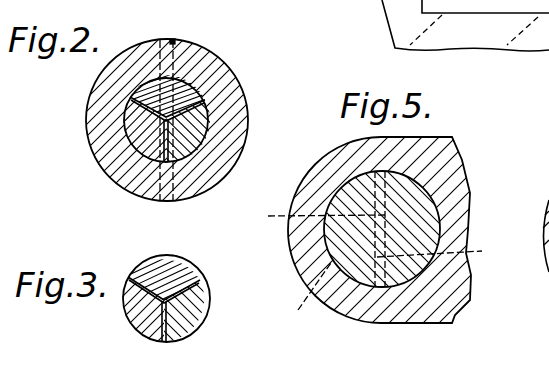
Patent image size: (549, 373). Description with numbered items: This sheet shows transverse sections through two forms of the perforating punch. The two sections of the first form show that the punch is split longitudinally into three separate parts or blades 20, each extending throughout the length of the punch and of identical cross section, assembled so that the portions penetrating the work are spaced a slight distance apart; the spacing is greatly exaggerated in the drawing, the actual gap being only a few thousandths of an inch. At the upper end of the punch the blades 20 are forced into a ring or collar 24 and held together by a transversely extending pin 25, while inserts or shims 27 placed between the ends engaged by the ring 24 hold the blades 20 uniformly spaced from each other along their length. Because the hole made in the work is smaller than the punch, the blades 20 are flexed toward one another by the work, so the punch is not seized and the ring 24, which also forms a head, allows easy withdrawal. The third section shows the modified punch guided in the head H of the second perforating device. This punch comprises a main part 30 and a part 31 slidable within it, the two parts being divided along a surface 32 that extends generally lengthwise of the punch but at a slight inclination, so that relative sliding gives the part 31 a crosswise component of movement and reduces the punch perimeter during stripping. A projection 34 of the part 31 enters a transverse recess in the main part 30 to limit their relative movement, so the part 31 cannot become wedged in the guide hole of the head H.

In FIG. 2, the parts or blades of the punch 20 is at (197, 62).
In FIG. 3, the parts or blades of the punch 20 is at (207, 302).
In FIG. 2, the ring or collar 24 is at (97, 118).
In FIG. 2, the transversely extending pin 25 is at (172, 40).
In FIG. 2, the inserts or shims 27 is at (182, 104).
In FIG. 5, the head H is at (435, 143).
In FIG. 5, the main part of the punch 30 is at (430, 222).
In FIG. 5, the slidable part of the punch 31 is at (313, 299).
In FIG. 5, the surface 32 is at (446, 258).
In FIG. 5, the projection 34 is at (312, 213).